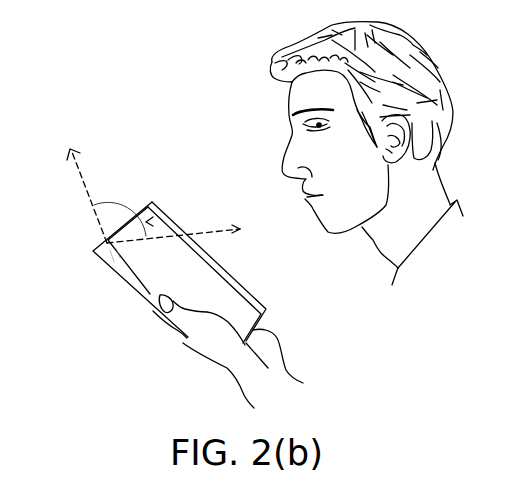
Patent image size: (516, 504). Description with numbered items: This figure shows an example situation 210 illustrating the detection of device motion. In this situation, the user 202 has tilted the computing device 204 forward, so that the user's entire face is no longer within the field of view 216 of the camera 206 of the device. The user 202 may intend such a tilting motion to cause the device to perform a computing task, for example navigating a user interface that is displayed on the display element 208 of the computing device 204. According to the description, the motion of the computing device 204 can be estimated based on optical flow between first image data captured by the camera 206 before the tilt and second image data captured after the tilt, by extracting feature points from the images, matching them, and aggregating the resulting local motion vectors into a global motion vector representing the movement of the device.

The user 202 is at (143, 300).
The computing device 204 is at (393, 312).
The camera 206 is at (105, 243).
The display element 208 is at (237, 353).
The example situation 210 is at (74, 423).
The field of view 216 is at (146, 222).